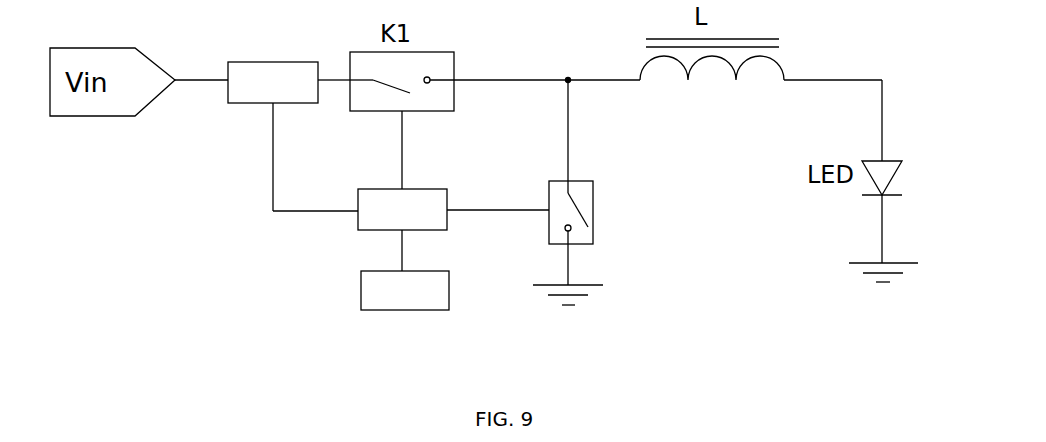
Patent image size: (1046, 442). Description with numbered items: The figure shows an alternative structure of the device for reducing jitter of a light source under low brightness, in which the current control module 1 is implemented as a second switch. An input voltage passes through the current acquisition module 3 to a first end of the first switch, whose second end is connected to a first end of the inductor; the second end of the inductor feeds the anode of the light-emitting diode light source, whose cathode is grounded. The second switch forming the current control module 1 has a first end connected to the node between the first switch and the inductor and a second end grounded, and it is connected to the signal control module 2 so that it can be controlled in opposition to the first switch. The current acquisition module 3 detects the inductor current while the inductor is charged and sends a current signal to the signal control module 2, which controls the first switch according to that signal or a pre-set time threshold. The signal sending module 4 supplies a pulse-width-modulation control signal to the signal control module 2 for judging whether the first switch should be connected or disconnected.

The current control module 1 is at (599, 221).
The signal control module 2 is at (377, 217).
The current acquisition module 3 is at (260, 86).
The signal sending module 4 is at (398, 300).